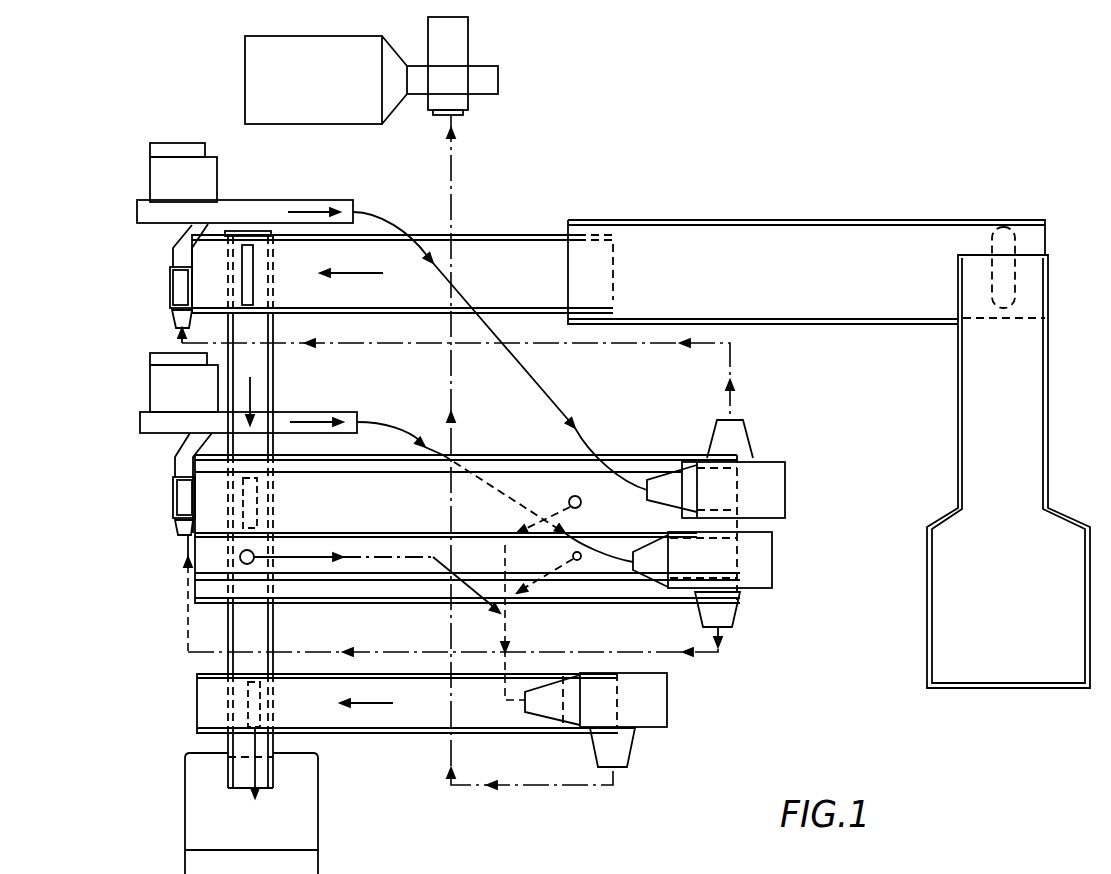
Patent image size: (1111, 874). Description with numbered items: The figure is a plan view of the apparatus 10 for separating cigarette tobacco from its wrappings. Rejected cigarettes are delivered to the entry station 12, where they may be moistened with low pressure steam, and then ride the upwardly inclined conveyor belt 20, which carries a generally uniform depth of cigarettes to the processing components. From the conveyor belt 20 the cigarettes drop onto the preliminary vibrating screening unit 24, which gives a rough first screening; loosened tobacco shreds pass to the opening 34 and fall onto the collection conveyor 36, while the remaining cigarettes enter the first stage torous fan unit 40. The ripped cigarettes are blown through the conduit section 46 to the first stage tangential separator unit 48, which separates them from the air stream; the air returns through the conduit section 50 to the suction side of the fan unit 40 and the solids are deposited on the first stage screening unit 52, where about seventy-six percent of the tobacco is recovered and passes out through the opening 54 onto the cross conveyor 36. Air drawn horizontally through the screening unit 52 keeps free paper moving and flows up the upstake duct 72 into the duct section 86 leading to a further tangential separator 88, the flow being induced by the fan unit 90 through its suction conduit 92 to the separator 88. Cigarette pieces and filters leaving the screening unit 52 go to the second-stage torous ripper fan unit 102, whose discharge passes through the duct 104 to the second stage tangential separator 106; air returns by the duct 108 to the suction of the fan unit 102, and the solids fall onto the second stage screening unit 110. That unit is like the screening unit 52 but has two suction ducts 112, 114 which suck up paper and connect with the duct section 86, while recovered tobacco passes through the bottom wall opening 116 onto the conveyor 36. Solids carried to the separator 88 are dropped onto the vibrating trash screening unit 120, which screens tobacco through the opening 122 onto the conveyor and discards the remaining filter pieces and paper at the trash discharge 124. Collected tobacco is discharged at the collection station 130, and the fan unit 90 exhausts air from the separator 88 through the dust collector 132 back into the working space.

The apparatus 10 is at (698, 191).
The entry station 12 is at (1017, 606).
The upwardly inclined conveyor belt 20 is at (853, 190).
The preliminary vibrating screening unit 24 is at (513, 198).
The opening 34 is at (245, 262).
The collection conveyor 36 is at (274, 384).
The first stage torous fan unit 40 is at (231, 173).
The conduit section 46 is at (400, 180).
The first stage tangential separator unit 48 is at (786, 492).
The conduit section 50 is at (732, 363).
The first stage screening unit 52 is at (540, 453).
The opening 54 is at (237, 492).
The upstake duct 72 is at (581, 500).
The duct section 86 is at (504, 545).
The tangential separator 88 is at (668, 698).
The fan unit 90 is at (499, 82).
The conduit 92 is at (458, 753).
The second-stage torous ripper fan unit 102 is at (150, 393).
The duct 104 is at (424, 442).
The second stage tangential separator 106 is at (786, 560).
The duct 108 is at (360, 651).
The second stage screening unit 110 is at (592, 597).
The suction duct 112 is at (573, 557).
The suction duct 114 is at (240, 556).
The bottom wall opening 116 is at (237, 568).
The trash screening unit 120 is at (395, 729).
The opening 122 is at (248, 712).
The trash discharge 124 is at (207, 690).
The collection station 130 is at (198, 827).
The dust collector 132 is at (253, 46).